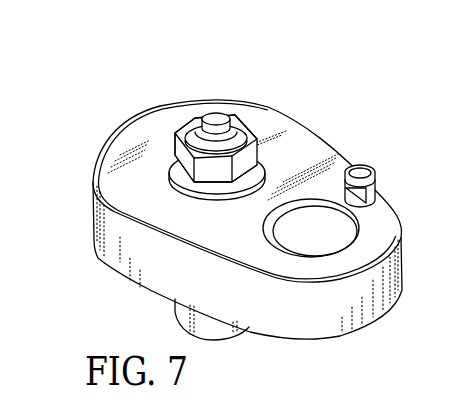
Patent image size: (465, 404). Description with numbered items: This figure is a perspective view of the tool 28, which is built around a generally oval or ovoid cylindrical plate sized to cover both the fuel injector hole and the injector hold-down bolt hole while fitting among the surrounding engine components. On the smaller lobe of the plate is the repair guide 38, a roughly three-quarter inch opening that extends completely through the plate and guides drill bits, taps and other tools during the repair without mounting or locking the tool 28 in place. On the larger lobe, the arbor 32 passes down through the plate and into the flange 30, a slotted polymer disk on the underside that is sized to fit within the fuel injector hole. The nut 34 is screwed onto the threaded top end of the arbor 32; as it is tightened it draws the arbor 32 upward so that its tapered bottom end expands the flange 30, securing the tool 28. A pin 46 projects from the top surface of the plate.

The tool 28 is at (113, 101).
The flange 30 is at (242, 346).
The arbor 32 is at (216, 118).
The nut 34 is at (176, 167).
The repair guide 38 is at (345, 229).
The pin 46 is at (367, 165).